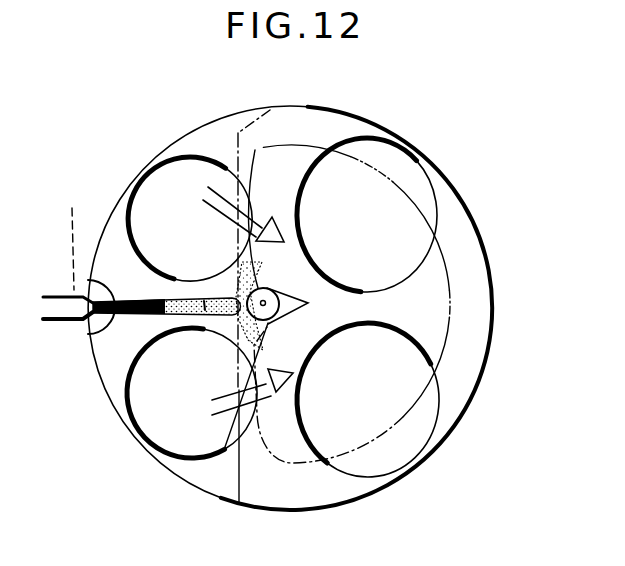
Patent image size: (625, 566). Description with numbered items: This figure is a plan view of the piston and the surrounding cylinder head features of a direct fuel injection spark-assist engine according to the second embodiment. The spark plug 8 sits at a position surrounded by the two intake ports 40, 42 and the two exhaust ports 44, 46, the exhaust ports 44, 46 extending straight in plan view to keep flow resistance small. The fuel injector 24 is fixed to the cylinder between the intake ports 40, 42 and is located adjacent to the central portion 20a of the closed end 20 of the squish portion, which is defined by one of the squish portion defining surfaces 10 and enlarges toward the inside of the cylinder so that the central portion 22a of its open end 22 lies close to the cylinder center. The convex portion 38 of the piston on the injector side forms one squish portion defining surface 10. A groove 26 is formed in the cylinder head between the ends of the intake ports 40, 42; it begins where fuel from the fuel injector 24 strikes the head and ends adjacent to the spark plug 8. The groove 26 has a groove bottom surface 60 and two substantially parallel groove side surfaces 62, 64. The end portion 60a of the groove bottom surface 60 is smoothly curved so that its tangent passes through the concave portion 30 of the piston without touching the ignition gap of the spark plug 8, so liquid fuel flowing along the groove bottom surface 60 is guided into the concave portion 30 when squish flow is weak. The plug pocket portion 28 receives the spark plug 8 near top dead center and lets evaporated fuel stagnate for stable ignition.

The spark plug 8 is at (263, 304).
The squish portion defining surface 10 is at (230, 120).
The closed end 20 is at (198, 118).
The central portion of closed end 20a is at (79, 238).
The open end 22 is at (270, 110).
The central portion of open end 22a is at (282, 286).
The fuel injector 24 is at (62, 322).
The groove 26 is at (132, 318).
The plug pocket portion 28 is at (262, 328).
The concave portion 30 is at (353, 162).
The convex portion 38 is at (233, 470).
The intake port 40 is at (203, 157).
The intake port 42 is at (213, 457).
The exhaust port 44 is at (345, 137).
The exhaust port 46 is at (375, 477).
The groove bottom surface 60 is at (200, 312).
The curved end portion of groove bottom surface 60a is at (224, 290).
The groove side surface 62 is at (206, 312).
The groove side surface 64 is at (198, 300).